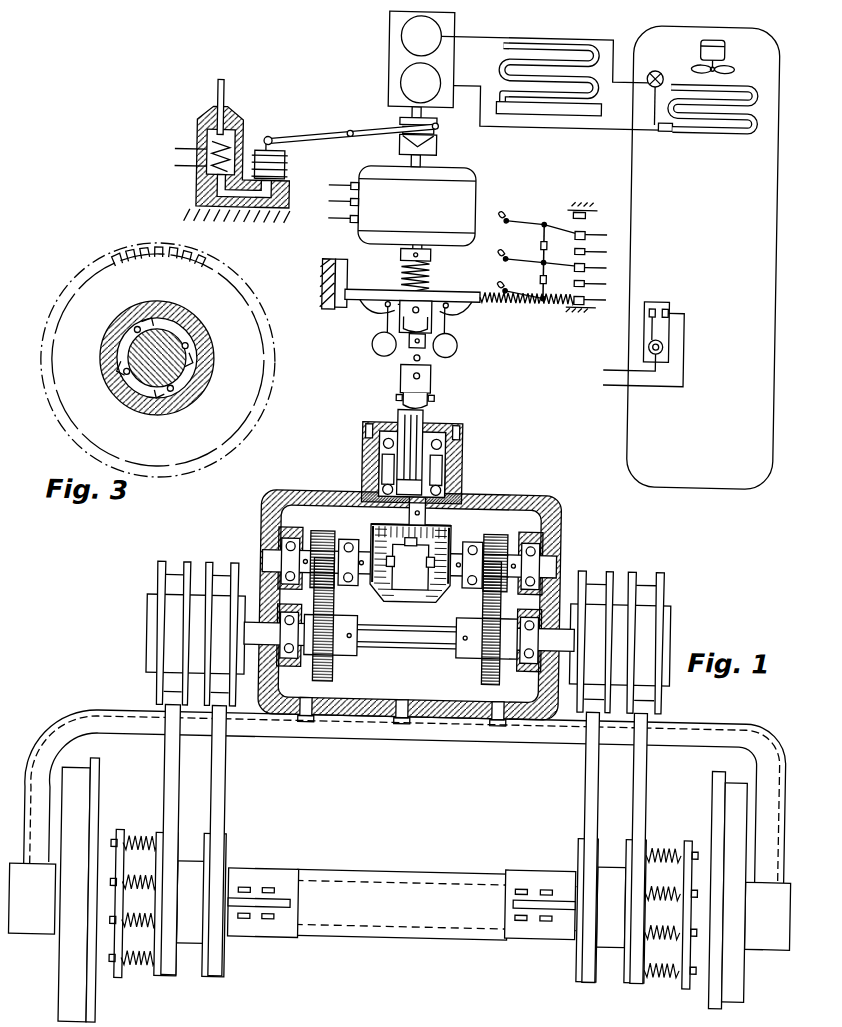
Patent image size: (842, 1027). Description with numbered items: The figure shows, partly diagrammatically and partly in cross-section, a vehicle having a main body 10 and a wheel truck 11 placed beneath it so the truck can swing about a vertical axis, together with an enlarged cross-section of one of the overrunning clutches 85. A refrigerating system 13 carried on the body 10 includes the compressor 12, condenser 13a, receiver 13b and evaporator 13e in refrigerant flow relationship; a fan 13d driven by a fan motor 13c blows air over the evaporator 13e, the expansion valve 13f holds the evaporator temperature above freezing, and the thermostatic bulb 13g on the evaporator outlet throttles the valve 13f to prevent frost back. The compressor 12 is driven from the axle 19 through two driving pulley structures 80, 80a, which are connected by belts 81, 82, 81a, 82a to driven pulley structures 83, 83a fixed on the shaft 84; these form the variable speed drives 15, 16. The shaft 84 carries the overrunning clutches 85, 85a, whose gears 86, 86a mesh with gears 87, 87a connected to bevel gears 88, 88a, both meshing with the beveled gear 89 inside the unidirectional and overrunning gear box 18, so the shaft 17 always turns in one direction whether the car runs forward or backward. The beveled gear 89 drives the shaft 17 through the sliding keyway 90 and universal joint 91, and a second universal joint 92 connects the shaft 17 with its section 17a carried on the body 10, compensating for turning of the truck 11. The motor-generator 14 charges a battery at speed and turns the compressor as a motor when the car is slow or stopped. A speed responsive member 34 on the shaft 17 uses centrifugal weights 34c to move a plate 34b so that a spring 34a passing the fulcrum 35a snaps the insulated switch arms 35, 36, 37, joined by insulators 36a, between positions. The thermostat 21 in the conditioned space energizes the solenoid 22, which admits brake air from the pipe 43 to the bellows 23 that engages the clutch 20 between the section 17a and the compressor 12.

In FIG. 1, the main body 10 is at (630, 426).
In FIG. 1, the wheel truck 11 is at (722, 728).
In FIG. 1, the compressor 12 is at (448, 36).
In FIG. 1, the refrigerating system 13 is at (635, 89).
In FIG. 1, the condenser 13a is at (550, 44).
In FIG. 1, the receiver 13b is at (560, 112).
In FIG. 1, the fan motor 13c is at (721, 50).
In FIG. 1, the fan 13d is at (728, 72).
In FIG. 1, the evaporator 13e is at (746, 134).
In FIG. 1, the expansion valve 13f is at (656, 72).
In FIG. 1, the thermostatic bulb 13g is at (664, 134).
In FIG. 1, the motor-generator 14 is at (470, 200).
In FIG. 1, the variable speed drive 15 is at (590, 778).
In FIG. 1, the variable speed drive 16 is at (218, 772).
In FIG. 1, the shaft 17 is at (432, 378).
In FIG. 1, the shaft section 17a is at (422, 164).
In FIG. 1, the gear box 18 is at (496, 508).
In FIG. 1, the axle 19 is at (402, 886).
In FIG. 1, the clutch 20 is at (437, 130).
In FIG. 1, the thermostat 21 is at (672, 304).
In FIG. 1, the solenoid 22 is at (284, 136).
In FIG. 1, the bellows 23 is at (285, 166).
In FIG. 1, the speed responsive member 34 is at (447, 301).
In FIG. 1, the spring 34a is at (540, 304).
In FIG. 1, the plate 34b is at (438, 292).
In FIG. 1, the centrifugal weights 34c is at (458, 346).
In FIG. 1, the switch arm 35 is at (530, 296).
In FIG. 1, the fulcrum 35a is at (498, 282).
In FIG. 1, the switch arm 36 is at (522, 258).
In FIG. 1, the insulators 36a is at (566, 244).
In FIG. 1, the switch arm 37 is at (526, 222).
In FIG. 1, the brake air pipe 43 is at (222, 108).
In FIG. 1, the driving pulley structure 80 is at (626, 838).
In FIG. 1, the driving pulley structure 80a is at (210, 812).
In FIG. 1, the belt 81 is at (640, 796).
In FIG. 1, the belt 81a is at (220, 804).
In FIG. 1, the belt 82 is at (590, 802).
In FIG. 1, the belt 82a is at (170, 784).
In FIG. 1, the driven pulley structure 83 is at (618, 574).
In FIG. 1, the driven pulley structure 83a is at (200, 562).
In FIG. 1, the shaft 84 is at (412, 646).
In FIG. 3, the overrunning clutch 85 is at (196, 332).
In FIG. 1, the overrunning clutch 85 is at (476, 622).
In FIG. 1, the overrunning clutch 85a is at (338, 620).
In FIG. 1, the gear 86 is at (482, 680).
In FIG. 1, the gear 86a is at (328, 680).
In FIG. 1, the gear 87 is at (495, 540).
In FIG. 1, the gear 87a is at (330, 536).
In FIG. 1, the bevel gear 88 is at (410, 573).
In FIG. 1, the bevel gear 88a is at (388, 594).
In FIG. 1, the beveled gear 89 is at (430, 518).
In FIG. 1, the sliding keyway 90 is at (430, 428).
In FIG. 1, the universal joint 91 is at (398, 394).
In FIG. 1, the universal joint 92 is at (400, 318).